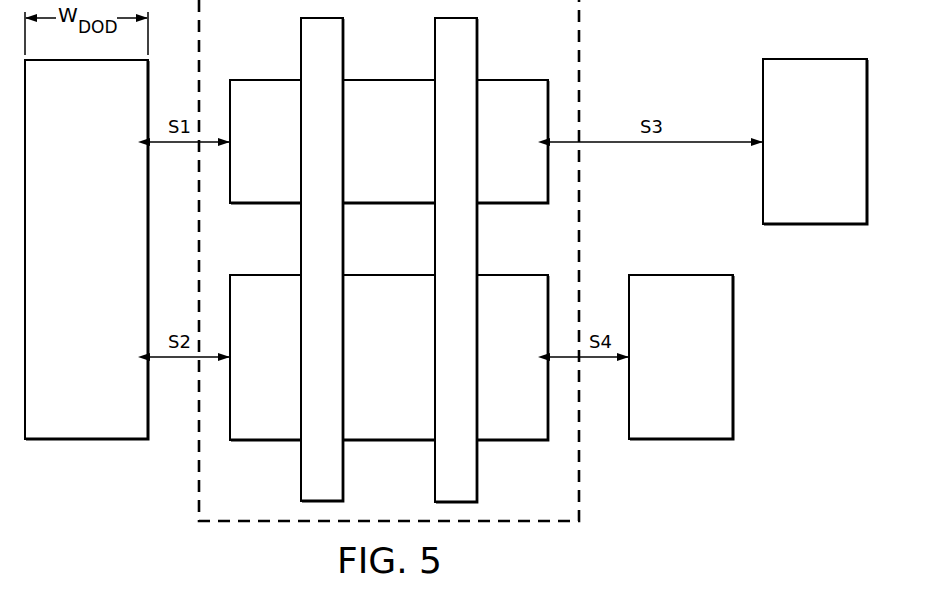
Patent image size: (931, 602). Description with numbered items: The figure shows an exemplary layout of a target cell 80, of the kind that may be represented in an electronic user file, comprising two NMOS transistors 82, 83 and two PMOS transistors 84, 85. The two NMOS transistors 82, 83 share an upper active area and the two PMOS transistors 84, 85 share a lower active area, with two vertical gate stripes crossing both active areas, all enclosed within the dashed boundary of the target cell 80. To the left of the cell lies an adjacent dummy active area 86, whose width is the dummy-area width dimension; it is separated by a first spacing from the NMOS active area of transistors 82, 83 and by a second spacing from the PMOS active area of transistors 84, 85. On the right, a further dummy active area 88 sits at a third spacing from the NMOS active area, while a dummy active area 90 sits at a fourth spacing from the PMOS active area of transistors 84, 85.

The target cell 80 is at (528, 527).
The NMOS transistor 82 is at (301, 121).
The NMOS transistor 83 is at (477, 121).
The PMOS transistor 84 is at (301, 397).
The PMOS transistor 85 is at (477, 398).
The dummy active area 86 is at (98, 263).
The dummy active area 88 is at (801, 156).
The dummy active area 90 is at (669, 372).